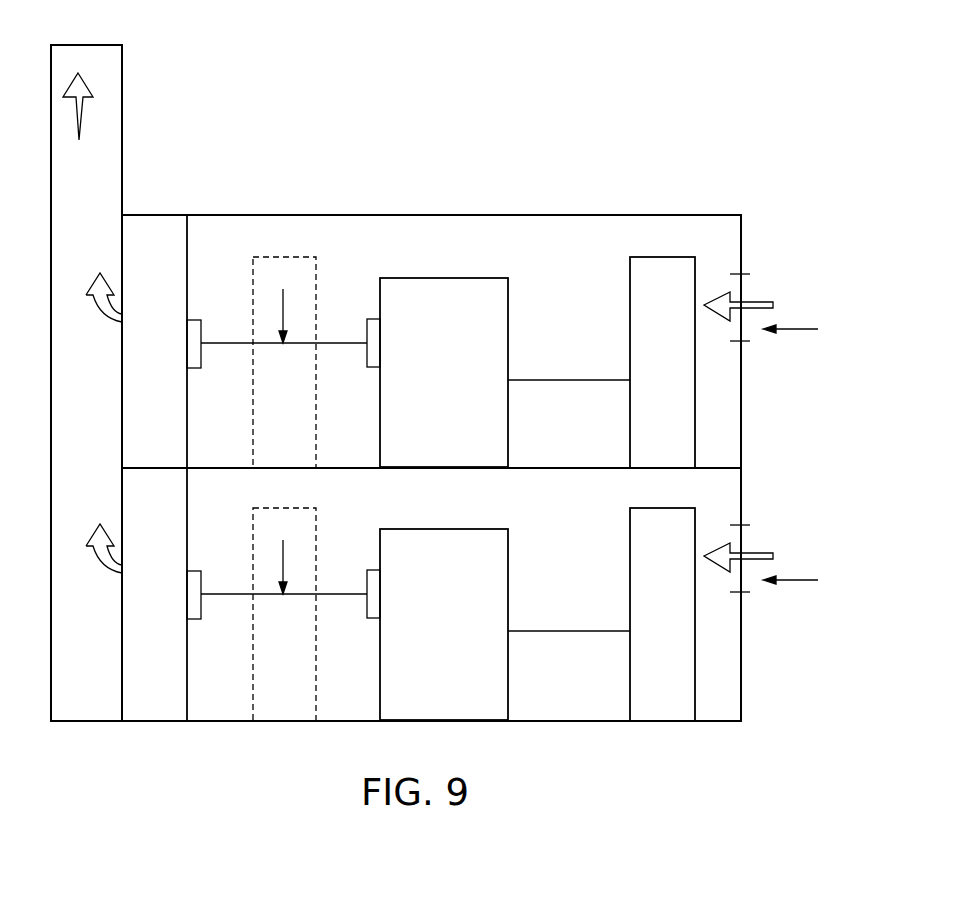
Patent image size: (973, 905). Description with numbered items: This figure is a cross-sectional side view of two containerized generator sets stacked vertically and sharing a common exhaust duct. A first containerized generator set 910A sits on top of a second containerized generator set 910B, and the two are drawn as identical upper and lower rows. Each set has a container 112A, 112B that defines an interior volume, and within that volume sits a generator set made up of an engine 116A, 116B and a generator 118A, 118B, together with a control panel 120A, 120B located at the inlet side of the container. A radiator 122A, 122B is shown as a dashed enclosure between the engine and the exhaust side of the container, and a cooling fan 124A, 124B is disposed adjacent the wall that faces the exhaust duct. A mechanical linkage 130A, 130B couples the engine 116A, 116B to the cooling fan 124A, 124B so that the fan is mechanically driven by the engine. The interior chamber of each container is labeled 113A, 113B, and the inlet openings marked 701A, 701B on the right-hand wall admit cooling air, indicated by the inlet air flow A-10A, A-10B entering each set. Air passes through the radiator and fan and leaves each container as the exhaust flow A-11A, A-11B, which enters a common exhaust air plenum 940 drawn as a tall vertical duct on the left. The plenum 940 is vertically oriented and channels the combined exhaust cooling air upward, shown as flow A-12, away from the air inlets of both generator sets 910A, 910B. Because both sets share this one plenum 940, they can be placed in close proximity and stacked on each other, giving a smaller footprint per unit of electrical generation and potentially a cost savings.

The common exhaust air plenum 940 is at (122, 128).
The first containerized generator set 910A is at (541, 315).
The second containerized generator set 910B is at (541, 582).
The container 112A is at (741, 425).
The container 112B is at (741, 676).
The chamber A 113A is at (528, 258).
The chamber B 113B is at (528, 509).
The cooling fan 124A is at (131, 369).
The cooling fan 124B is at (131, 620).
The radiator 122A is at (261, 424).
The radiator 122B is at (261, 675).
The mechanical linkage 130A is at (283, 306).
The mechanical linkage 130B is at (283, 557).
The engine 116A is at (421, 396).
The engine 116B is at (421, 647).
The generator 118A is at (544, 416).
The generator 118B is at (544, 667).
The control panel 120A is at (639, 381).
The control panel 120B is at (639, 632).
The air inlet A 701A is at (816, 327).
The air inlet B 701B is at (815, 578).
The exhaust air flow A-12 is at (80, 94).
The outlet air flow A A-11A is at (92, 307).
The outlet air flow B A-11B is at (92, 558).
The inlet air flow A A-10A is at (759, 307).
The inlet air flow B A-10B is at (759, 558).